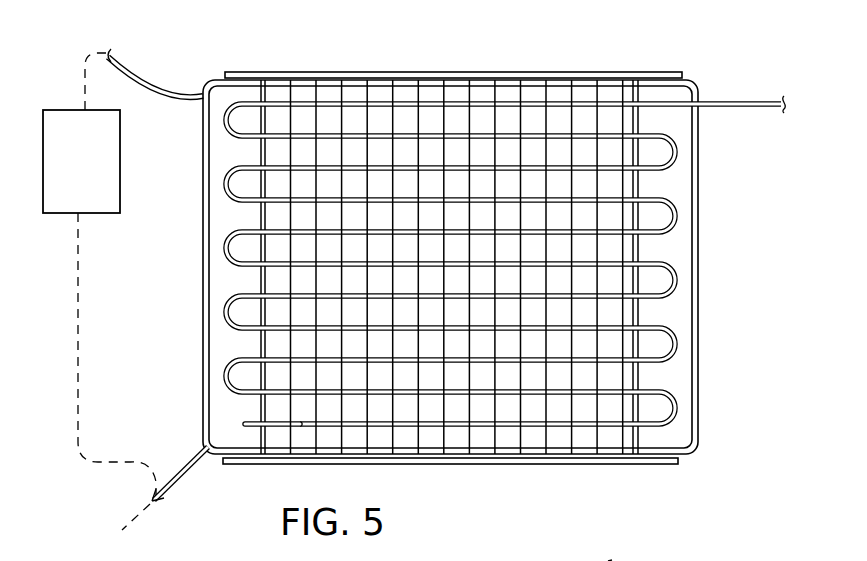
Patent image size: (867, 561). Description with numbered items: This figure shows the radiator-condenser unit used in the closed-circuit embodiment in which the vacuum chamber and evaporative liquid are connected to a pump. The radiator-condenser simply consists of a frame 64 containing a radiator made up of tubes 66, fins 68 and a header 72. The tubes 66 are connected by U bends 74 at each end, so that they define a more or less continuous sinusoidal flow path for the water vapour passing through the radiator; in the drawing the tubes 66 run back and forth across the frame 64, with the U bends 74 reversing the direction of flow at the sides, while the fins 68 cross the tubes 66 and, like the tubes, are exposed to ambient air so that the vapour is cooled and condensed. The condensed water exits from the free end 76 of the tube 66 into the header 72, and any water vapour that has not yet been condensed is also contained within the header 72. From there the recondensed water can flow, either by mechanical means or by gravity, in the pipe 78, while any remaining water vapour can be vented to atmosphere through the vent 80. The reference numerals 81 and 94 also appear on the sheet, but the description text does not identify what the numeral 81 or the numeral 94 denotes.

The frame 64 is at (413, 72).
The tubes 66 is at (727, 103).
The fins 68 is at (498, 435).
The header 72 is at (203, 264).
The U bends 74 is at (229, 368).
The free end 76 is at (243, 422).
The pipe 78 is at (188, 468).
The vent 80 is at (148, 80).
The control box 81 is at (120, 133).
The connection 94 is at (612, 560).